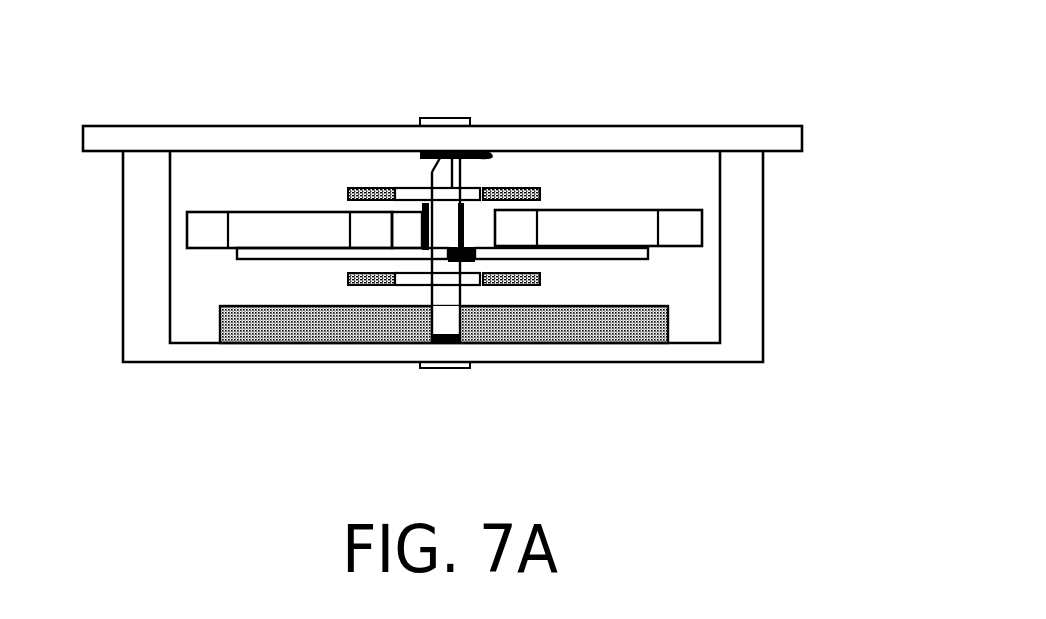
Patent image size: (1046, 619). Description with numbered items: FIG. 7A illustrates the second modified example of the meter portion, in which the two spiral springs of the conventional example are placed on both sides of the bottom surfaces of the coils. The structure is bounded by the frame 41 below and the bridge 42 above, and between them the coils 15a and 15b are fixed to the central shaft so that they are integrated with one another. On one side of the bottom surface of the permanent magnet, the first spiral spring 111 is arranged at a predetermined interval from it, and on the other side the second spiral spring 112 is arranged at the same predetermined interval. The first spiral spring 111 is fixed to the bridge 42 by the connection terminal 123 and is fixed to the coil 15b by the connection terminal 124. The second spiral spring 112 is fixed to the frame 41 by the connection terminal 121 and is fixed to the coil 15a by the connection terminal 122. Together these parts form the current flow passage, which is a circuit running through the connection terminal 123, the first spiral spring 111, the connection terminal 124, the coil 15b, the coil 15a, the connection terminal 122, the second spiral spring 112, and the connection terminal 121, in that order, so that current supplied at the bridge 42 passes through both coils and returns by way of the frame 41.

The frame 41 is at (187, 362).
The bridge 42 is at (143, 127).
The coil 15a is at (697, 223).
The coil 15b is at (190, 233).
The first spiral spring 111 is at (530, 183).
The second spiral spring 112 is at (375, 287).
The connection terminal 121 is at (463, 300).
The connection terminal 122 is at (477, 262).
The connection terminal 123 is at (487, 158).
The connection terminal 124 is at (390, 215).